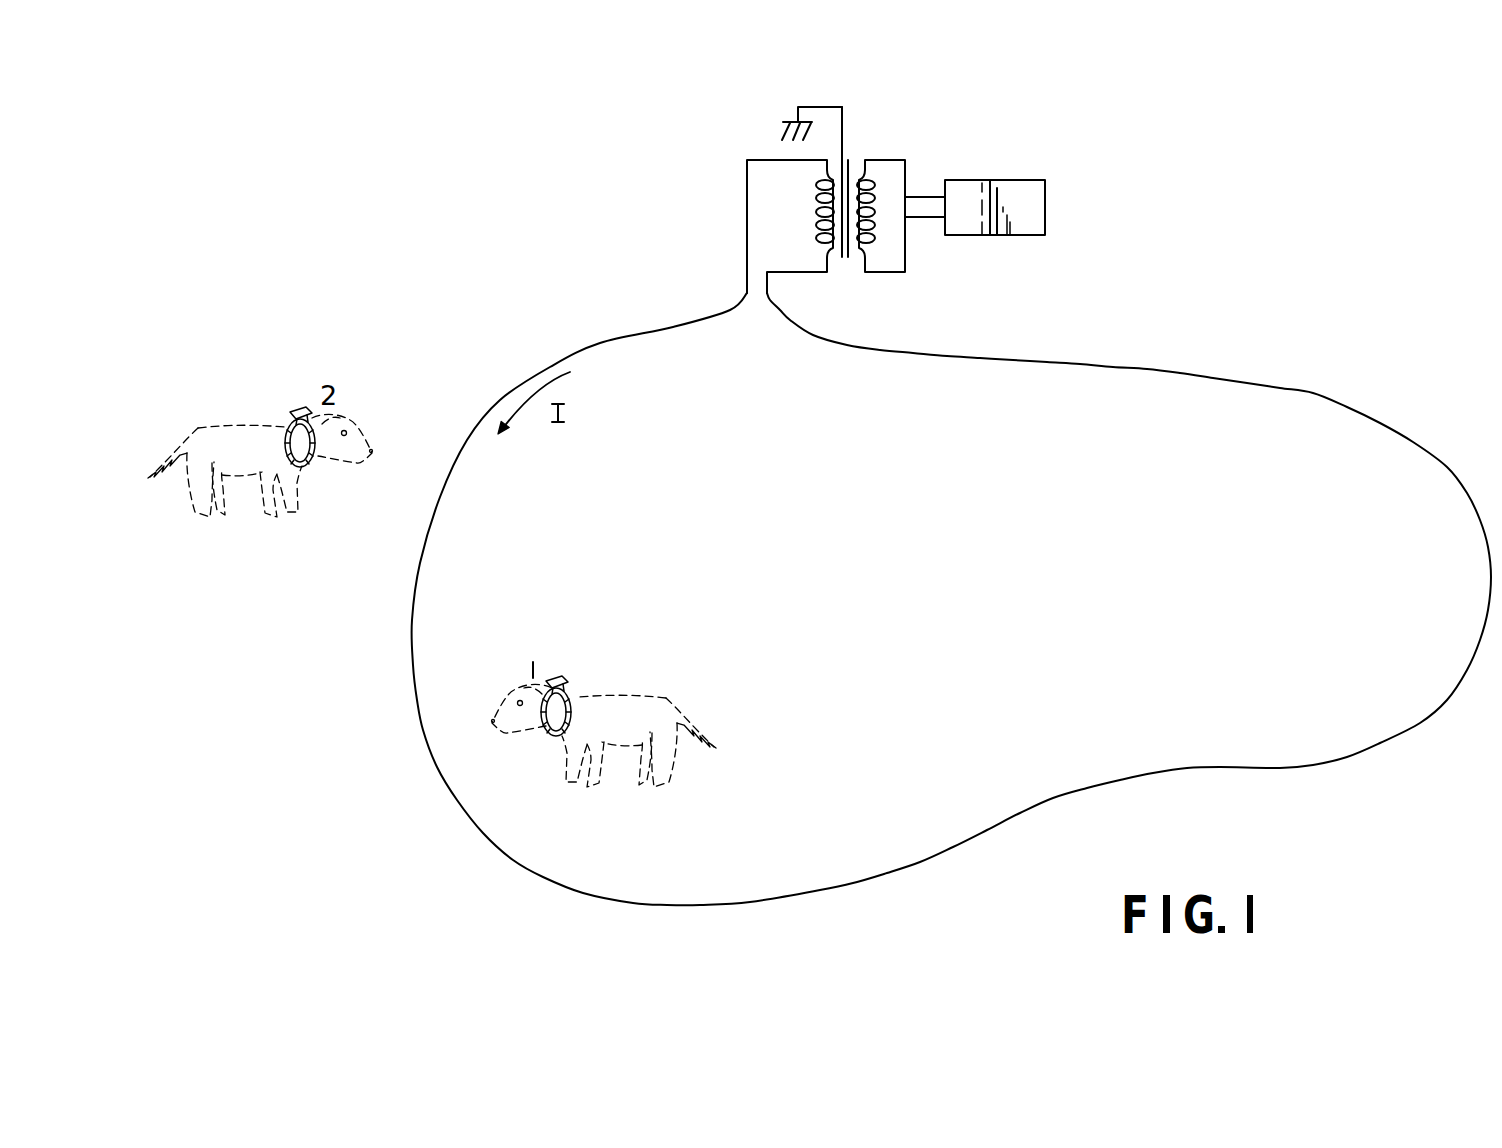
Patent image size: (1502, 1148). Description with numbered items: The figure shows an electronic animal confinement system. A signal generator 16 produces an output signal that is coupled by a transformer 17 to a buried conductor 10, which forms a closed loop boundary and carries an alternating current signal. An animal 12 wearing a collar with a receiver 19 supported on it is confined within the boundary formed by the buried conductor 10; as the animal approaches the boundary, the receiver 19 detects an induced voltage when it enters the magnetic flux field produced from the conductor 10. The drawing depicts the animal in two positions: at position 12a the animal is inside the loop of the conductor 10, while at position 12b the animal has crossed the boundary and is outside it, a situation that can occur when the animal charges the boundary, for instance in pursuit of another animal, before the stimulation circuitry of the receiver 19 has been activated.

The buried conductor 10 is at (1427, 448).
The animal 12 is at (329, 474).
The animal position inside boundary 12a is at (588, 640).
The animal position outside boundary 12b is at (311, 368).
The signal generator 16 is at (995, 227).
The transformer 17 is at (846, 209).
The receiver 19 is at (290, 412).